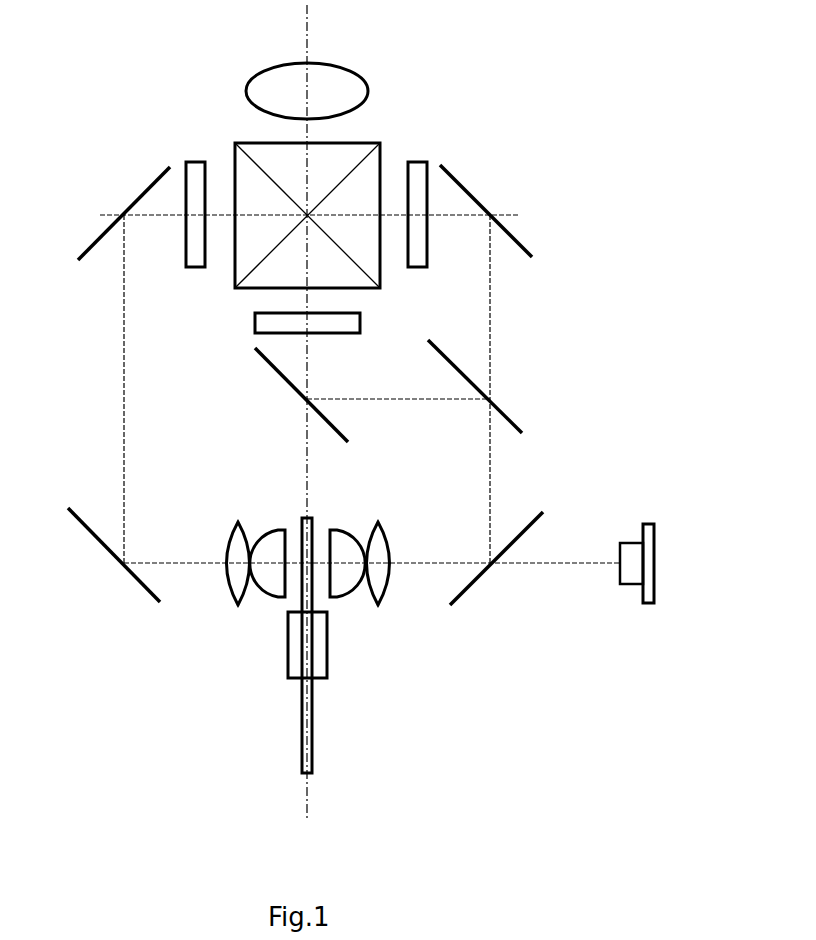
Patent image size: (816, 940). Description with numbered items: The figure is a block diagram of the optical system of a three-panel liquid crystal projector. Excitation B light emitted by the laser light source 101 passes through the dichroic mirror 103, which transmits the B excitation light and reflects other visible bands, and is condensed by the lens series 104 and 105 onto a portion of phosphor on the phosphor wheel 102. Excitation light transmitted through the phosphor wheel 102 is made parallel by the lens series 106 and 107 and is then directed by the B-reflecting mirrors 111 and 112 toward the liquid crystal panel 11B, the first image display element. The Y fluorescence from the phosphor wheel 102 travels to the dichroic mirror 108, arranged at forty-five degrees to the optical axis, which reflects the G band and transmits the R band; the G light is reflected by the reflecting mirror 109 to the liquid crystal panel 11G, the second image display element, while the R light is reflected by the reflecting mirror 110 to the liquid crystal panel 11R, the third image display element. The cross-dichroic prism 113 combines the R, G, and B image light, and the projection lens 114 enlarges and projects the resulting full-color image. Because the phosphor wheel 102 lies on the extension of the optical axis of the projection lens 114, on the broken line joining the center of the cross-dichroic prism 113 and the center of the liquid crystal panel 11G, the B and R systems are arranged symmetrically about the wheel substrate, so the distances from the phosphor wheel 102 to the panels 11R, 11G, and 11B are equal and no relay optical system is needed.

The laser light source 101 is at (648, 604).
The phosphor wheel 102 is at (313, 734).
The dichroic mirror 103 is at (467, 594).
The lens series 104 is at (379, 606).
The lens series 105 is at (334, 533).
The lens series 106 is at (281, 533).
The lens series 107 is at (237, 606).
The dichroic mirror 108 is at (507, 417).
The reflecting mirror 109 is at (275, 369).
The reflecting mirror 110 is at (522, 237).
The reflecting mirror 111 is at (88, 533).
The reflecting mirror 112 is at (100, 238).
The cross-dichroic prism 113 is at (356, 152).
The projection lens 114 is at (333, 68).
The liquid crystal panel 11B is at (195, 265).
The liquid crystal panel 11R is at (417, 265).
The liquid crystal panel 11G is at (325, 334).